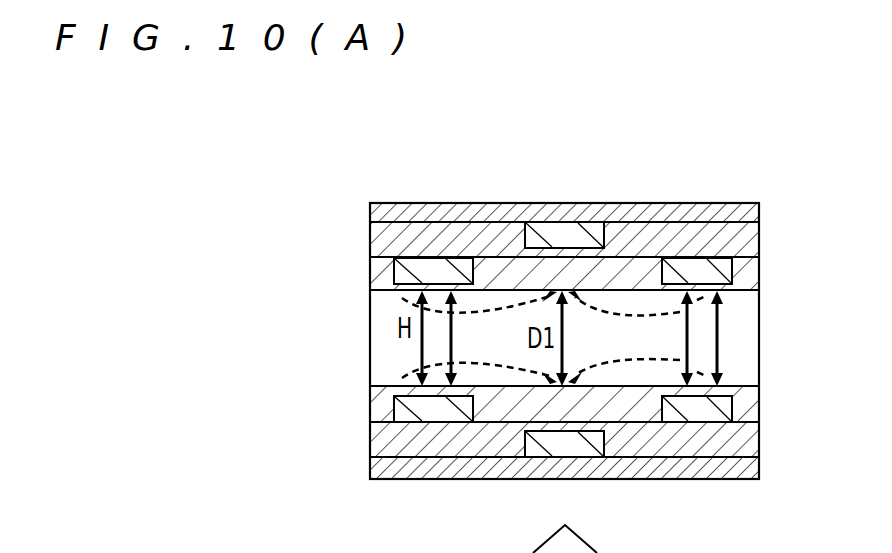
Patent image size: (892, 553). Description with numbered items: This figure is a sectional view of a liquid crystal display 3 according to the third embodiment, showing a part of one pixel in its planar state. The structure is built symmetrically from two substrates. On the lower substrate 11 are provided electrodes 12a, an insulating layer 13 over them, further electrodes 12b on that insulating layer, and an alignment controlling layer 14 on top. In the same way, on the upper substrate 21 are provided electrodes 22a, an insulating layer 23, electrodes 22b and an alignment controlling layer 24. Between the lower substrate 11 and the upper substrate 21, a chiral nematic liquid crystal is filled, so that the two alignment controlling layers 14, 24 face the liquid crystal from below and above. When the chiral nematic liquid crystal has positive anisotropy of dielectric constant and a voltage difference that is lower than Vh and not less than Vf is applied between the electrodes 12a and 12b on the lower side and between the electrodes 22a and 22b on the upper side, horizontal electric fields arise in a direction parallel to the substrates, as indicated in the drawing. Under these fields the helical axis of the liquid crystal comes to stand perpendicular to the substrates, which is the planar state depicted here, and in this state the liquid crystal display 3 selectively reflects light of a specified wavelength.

The liquid crystal display 3 is at (700, 147).
The lower substrate 11 is at (752, 468).
The insulating layer 13 is at (747, 443).
The alignment controlling layer 14 is at (740, 398).
The upper substrate 21 is at (760, 204).
The insulating layer 23 is at (760, 233).
The alignment controlling layer 24 is at (748, 280).
The electrodes 12a is at (545, 452).
The electrodes 12b is at (720, 256).
The electrodes 22a is at (550, 223).
The electrodes 22b is at (436, 257).